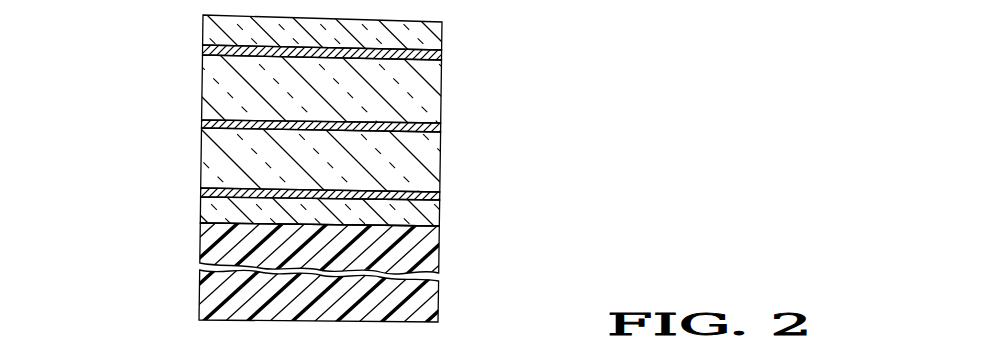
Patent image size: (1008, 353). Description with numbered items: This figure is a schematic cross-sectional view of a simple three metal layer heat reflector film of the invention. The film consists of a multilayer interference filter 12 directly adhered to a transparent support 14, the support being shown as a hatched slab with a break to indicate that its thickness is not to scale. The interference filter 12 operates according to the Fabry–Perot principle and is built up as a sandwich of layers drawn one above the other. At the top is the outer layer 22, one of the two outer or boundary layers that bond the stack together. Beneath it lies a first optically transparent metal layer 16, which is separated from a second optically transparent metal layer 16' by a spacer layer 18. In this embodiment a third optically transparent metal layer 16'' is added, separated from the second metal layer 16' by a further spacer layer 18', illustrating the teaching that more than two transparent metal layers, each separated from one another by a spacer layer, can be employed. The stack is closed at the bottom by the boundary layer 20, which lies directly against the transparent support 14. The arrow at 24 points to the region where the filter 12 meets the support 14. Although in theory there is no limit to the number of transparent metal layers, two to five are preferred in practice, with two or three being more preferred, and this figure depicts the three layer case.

The interference filter 12 is at (482, 125).
The outer layer 22 is at (442, 38).
The transparent metal layer 16 is at (546, 58).
The spacer layer 18 is at (361, 90).
The transparent metal layer 16' is at (551, 129).
The spacer layer 18' is at (374, 165).
The transparent metal layer 16'' is at (553, 192).
The boundary layer 20 is at (440, 216).
The transparent support 14 is at (444, 266).
The interface between interference filter and transparent support 24 is at (182, 234).